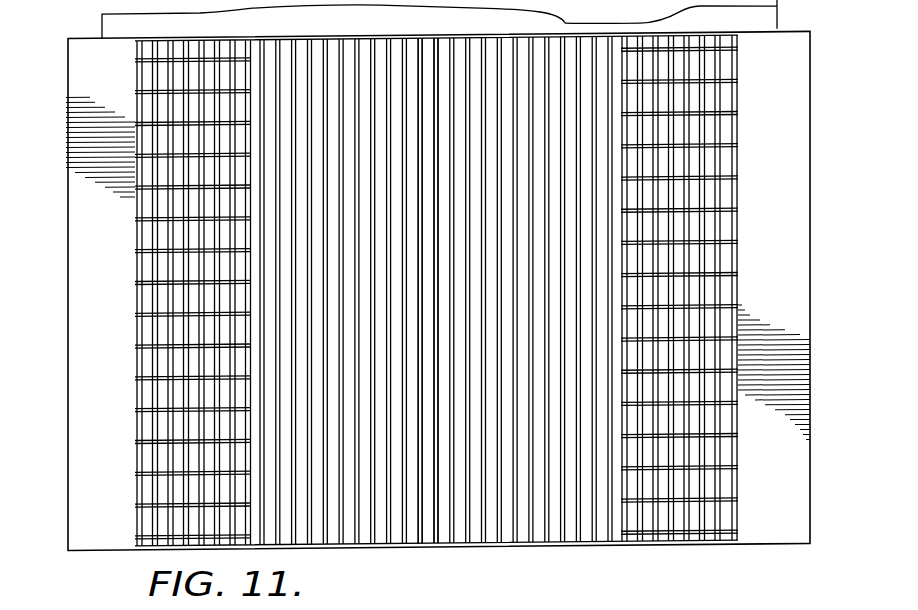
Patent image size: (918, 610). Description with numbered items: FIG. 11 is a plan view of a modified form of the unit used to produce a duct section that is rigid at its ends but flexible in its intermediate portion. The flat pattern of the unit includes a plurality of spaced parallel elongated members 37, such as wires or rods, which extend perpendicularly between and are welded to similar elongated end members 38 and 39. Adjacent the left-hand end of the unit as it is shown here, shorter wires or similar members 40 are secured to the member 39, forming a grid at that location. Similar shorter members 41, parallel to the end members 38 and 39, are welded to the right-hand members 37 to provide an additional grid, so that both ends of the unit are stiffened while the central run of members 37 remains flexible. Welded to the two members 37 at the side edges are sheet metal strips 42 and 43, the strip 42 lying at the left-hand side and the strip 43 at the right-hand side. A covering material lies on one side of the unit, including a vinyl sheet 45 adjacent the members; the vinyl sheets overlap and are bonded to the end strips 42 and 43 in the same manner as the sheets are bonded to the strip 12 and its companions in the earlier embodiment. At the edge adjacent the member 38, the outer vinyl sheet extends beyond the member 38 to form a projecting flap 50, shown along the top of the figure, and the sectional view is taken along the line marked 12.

The strip 12 is at (577, 1).
The elongated members 37 is at (328, 83).
The end member 38 is at (424, 33).
The end member 39 is at (414, 540).
The shorter members 40 is at (180, 185).
The shorter members 41 is at (713, 463).
The sheet metal strip 42 is at (86, 411).
The sheet metal strip 43 is at (797, 344).
The vinyl sheet 45 is at (559, 605).
The projecting flap 50 is at (778, 16).